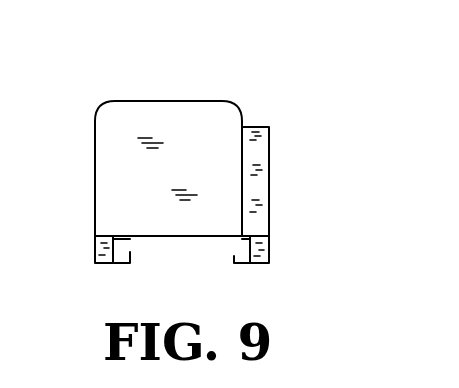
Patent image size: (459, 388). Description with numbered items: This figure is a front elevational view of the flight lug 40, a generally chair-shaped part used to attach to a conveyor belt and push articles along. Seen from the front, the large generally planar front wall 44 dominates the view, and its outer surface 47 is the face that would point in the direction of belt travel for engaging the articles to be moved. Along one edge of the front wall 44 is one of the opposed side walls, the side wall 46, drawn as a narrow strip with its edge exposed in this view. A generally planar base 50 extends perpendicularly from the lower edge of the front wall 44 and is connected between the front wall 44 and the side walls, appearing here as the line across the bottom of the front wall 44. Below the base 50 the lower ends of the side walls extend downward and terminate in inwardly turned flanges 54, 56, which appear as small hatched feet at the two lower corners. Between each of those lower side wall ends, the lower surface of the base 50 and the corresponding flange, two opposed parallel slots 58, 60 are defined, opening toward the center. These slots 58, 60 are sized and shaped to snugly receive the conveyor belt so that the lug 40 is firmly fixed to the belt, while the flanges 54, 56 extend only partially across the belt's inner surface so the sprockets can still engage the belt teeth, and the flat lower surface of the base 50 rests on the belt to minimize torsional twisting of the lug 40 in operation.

The flight lug 40 is at (206, 85).
The front wall 44 is at (155, 100).
The side wall 46 is at (263, 152).
The outer surface 47 is at (127, 153).
The base 50 is at (176, 238).
The inwardly turned flange 54 is at (240, 264).
The inwardly turned flange 56 is at (126, 263).
The slot 58 is at (123, 243).
The slot 60 is at (243, 242).